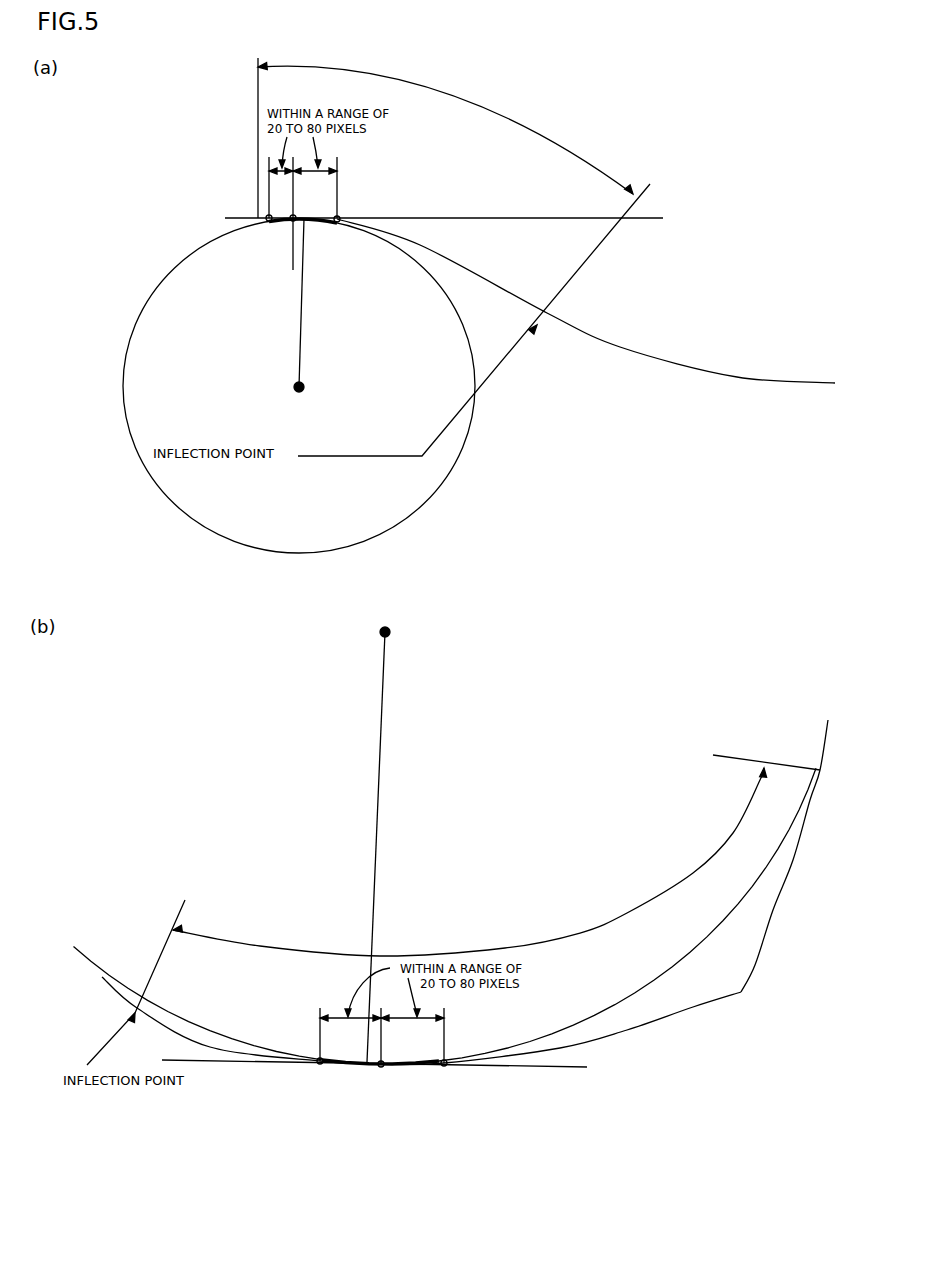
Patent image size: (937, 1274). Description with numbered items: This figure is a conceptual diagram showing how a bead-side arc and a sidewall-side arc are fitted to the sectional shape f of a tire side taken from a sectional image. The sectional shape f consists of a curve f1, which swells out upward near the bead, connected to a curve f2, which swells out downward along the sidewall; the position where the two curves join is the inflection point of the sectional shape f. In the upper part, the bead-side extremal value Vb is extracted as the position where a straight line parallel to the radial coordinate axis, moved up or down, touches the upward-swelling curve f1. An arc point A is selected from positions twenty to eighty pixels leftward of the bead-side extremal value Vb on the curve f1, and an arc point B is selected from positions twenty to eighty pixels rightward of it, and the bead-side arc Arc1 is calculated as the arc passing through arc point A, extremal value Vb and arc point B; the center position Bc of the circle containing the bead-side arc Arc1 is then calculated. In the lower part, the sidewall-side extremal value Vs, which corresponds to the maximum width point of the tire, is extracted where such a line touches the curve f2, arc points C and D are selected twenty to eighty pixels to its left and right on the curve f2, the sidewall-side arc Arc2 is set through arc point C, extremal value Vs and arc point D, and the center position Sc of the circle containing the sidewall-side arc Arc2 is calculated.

The arc point A is at (269, 222).
The arc point B is at (337, 222).
The center position Bc is at (303, 386).
The bead-side extremal value Vb is at (290, 228).
The bead-side arc Arc1 is at (283, 222).
The curve f1 is at (452, 98).
The sectional shape f is at (620, 347).
The center position Sc is at (390, 631).
The sidewall-side extremal value Vs is at (381, 1067).
The arc point C is at (320, 1066).
The arc point D is at (444, 1067).
The sidewall-side arc Arc2 is at (332, 1066).
The curve f2 is at (505, 948).